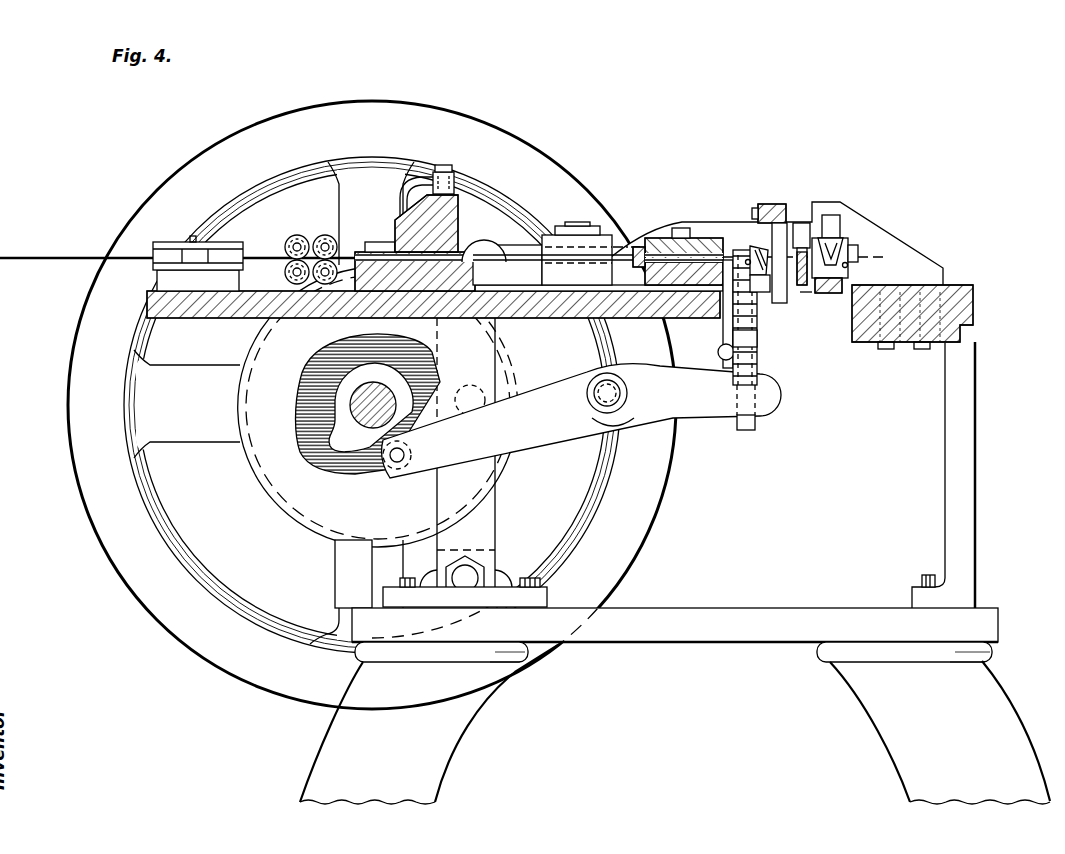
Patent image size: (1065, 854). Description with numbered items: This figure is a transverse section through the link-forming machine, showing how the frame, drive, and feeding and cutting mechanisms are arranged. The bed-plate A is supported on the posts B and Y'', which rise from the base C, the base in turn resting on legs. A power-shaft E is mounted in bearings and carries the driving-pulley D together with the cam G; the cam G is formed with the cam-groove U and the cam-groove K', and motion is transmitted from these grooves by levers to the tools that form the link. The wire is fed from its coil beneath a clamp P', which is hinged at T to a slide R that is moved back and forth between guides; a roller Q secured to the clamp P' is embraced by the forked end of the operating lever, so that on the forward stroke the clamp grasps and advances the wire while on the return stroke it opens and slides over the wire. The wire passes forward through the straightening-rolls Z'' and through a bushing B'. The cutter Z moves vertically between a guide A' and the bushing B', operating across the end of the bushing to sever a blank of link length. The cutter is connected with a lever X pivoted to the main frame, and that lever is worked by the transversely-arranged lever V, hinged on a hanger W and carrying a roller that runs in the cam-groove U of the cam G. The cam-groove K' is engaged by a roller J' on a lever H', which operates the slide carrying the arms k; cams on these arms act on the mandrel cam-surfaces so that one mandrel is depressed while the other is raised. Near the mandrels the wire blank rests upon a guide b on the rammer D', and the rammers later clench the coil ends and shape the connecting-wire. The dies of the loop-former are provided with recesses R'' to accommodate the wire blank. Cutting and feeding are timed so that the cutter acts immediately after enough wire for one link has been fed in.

The driving-pulley D is at (372, 405).
The cam G is at (375, 408).
The cam-groove K' is at (364, 407).
The slide R is at (368, 403).
The cam-groove U is at (360, 470).
The power-shaft E is at (392, 398).
The bed-plate A is at (445, 355).
The support standard m'' is at (492, 462).
The post B is at (363, 559).
The transversely-arranged lever V is at (581, 421).
The hanger W is at (620, 352).
The base C is at (764, 616).
The post Y'' is at (939, 475).
The arm k is at (771, 203).
The straightening-rolls Z'' is at (224, 253).
The roller J' is at (406, 260).
The clamp P' is at (412, 214).
The roller Q is at (458, 168).
The hinge T is at (472, 246).
The lever H' is at (580, 232).
The bushing B' is at (674, 232).
The cutter Z is at (706, 314).
The guide A' is at (755, 317).
The lever X is at (766, 362).
The rammer D' is at (797, 236).
The guide b is at (742, 262).
The recess R'' is at (799, 304).